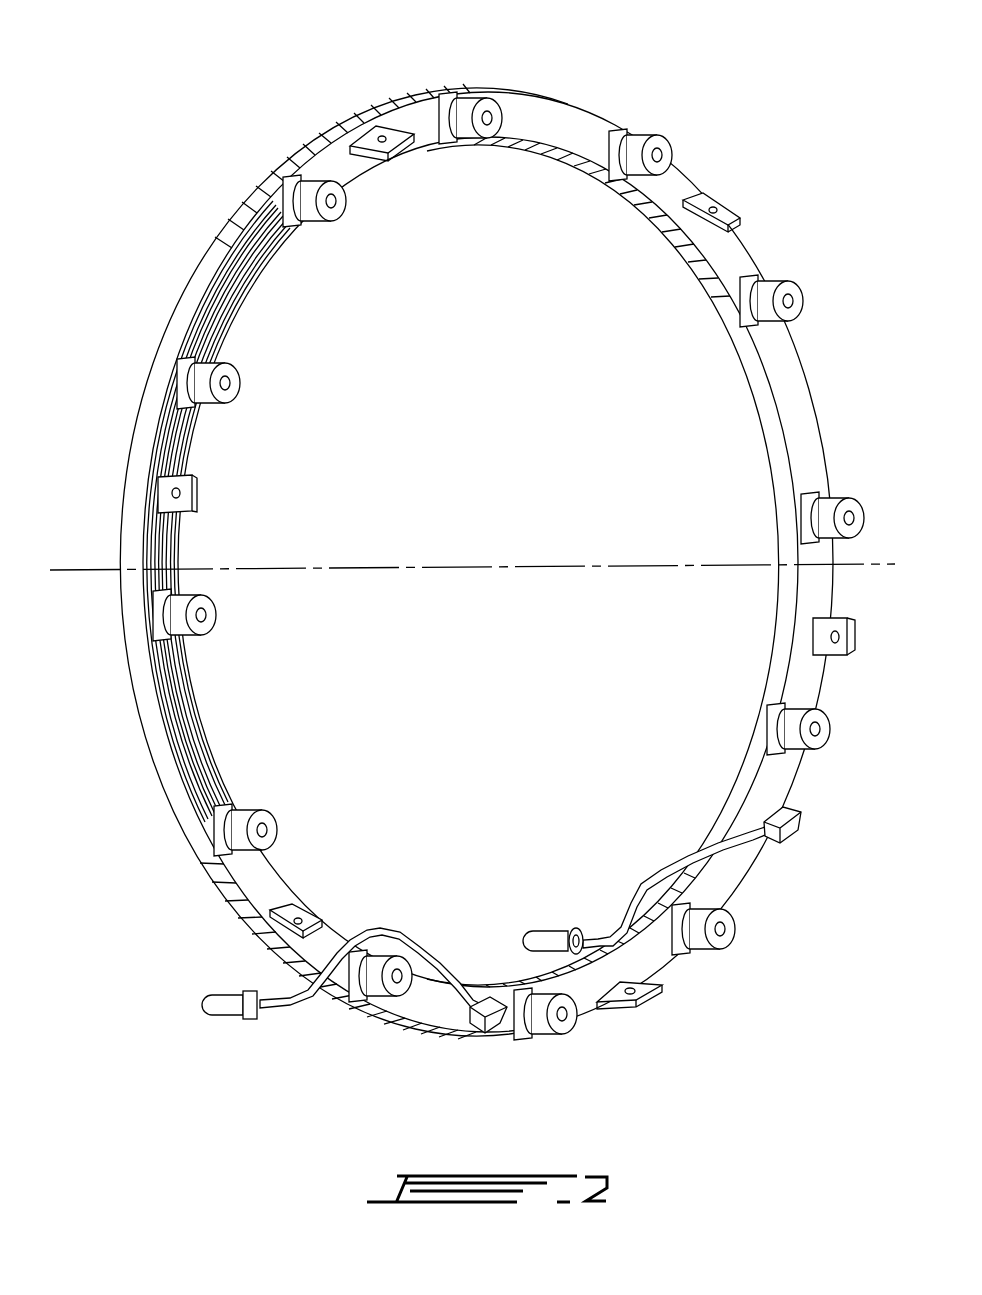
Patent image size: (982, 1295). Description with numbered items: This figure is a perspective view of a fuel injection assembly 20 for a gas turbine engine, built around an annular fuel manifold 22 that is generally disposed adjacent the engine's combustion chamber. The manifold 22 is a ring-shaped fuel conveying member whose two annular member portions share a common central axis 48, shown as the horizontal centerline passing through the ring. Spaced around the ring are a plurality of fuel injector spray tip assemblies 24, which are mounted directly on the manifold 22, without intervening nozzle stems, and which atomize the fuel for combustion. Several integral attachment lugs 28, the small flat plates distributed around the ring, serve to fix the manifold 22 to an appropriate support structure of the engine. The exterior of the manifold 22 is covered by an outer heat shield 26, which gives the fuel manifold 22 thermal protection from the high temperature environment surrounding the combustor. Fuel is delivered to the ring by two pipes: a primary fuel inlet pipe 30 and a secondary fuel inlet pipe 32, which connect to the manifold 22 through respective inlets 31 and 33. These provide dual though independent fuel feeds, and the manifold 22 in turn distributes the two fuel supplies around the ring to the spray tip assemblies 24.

The fuel injection assembly 20 is at (470, 563).
The annular fuel manifold 22 is at (770, 388).
The fuel injector spray tip assemblies 24 is at (638, 143).
The outer heat shield 26 is at (150, 423).
The integral attachment lugs 28 is at (367, 137).
The primary fuel inlet pipe 30 is at (303, 1000).
The inlet 31 is at (492, 1022).
The secondary fuel inlet pipe 32 is at (687, 870).
The inlet 33 is at (800, 833).
The central axis 48 is at (445, 565).